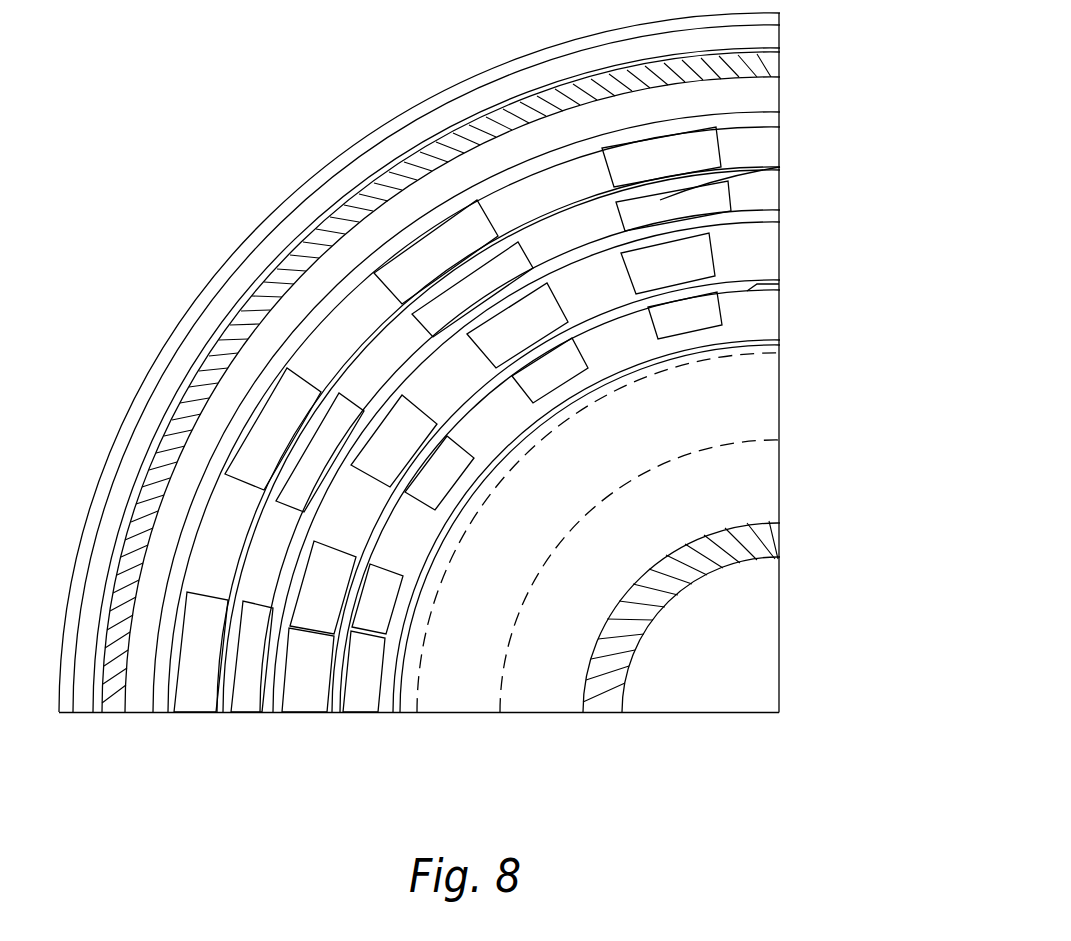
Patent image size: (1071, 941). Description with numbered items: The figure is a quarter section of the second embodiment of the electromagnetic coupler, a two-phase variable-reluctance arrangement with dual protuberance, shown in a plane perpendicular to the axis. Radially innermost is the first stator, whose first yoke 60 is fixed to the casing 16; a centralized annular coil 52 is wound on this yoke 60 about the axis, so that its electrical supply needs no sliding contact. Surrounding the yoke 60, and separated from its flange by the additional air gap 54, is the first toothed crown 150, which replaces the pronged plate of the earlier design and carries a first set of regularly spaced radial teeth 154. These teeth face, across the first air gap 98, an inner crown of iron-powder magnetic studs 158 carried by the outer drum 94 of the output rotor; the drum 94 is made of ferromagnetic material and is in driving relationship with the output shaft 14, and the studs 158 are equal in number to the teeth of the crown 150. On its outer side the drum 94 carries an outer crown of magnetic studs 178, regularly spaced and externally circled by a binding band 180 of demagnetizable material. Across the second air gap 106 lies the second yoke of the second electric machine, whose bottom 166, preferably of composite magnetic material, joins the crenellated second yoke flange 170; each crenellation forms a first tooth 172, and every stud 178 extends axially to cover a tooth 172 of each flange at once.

The output shaft 14 is at (783, 30).
The casing 16 is at (783, 62).
The bottom 166 is at (783, 96).
The second yoke flange 170 is at (783, 129).
The first tooth 172 is at (783, 161).
The magnetic stud 178 is at (783, 197).
The outer drum 94 is at (783, 222).
The magnetic stud 158 is at (683, 264).
The first set of radial teeth 154 is at (783, 287).
The first toothed crown 150 is at (788, 318).
The additional air gap 54 is at (782, 341).
The centralized annular coil 52 is at (779, 408).
The first yoke 60 is at (779, 493).
The second air gap 106 is at (217, 715).
The binding band 180 is at (223, 715).
The first air gap 98 is at (333, 714).